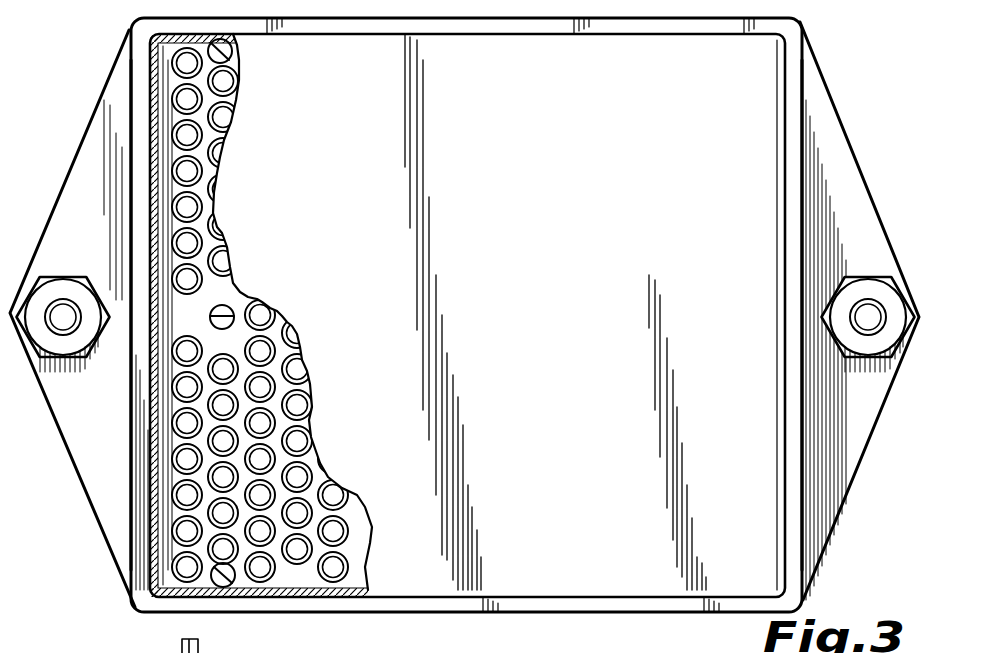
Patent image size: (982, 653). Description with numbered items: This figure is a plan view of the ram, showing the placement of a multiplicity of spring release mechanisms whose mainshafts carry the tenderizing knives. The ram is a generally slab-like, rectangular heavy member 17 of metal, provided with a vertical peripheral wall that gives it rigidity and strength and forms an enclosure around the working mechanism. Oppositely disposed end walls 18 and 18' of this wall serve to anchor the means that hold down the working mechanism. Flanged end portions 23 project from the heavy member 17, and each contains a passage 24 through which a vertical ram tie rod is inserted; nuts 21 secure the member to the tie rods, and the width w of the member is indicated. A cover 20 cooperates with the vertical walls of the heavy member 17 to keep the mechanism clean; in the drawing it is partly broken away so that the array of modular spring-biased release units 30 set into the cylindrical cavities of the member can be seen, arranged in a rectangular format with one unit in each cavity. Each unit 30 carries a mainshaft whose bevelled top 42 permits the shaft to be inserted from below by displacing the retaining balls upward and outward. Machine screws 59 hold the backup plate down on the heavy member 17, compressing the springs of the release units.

The heavy member 17 is at (404, 611).
The end wall 18 is at (104, 311).
The end wall 18' is at (835, 315).
The cover 20 is at (553, 87).
The nut 21 is at (58, 283).
The flanged end portion 23 is at (72, 178).
The passage 24 is at (465, 350).
The modular spring-biased release unit 30 is at (213, 204).
The bevelled top 42 is at (199, 641).
The machine screw 59 is at (233, 49).
The width dimension w is at (133, 520).